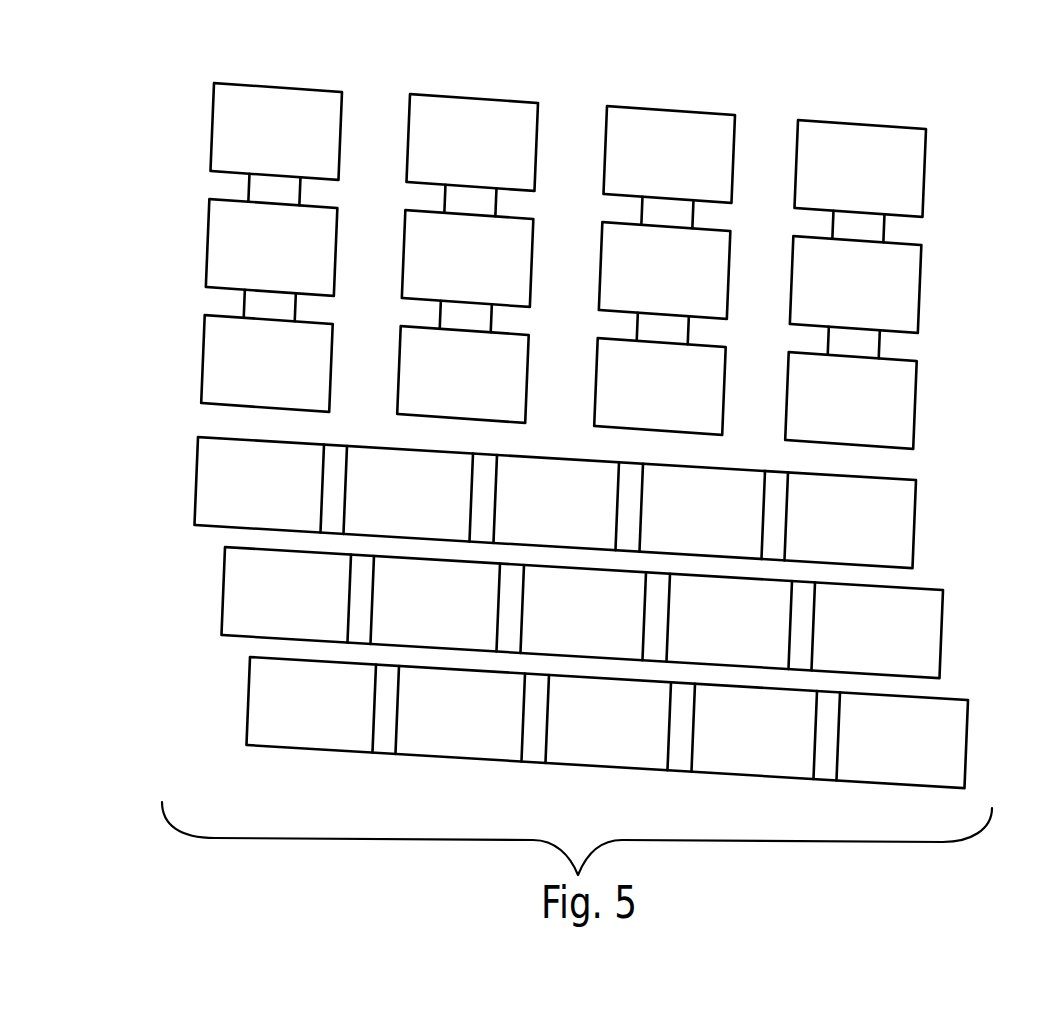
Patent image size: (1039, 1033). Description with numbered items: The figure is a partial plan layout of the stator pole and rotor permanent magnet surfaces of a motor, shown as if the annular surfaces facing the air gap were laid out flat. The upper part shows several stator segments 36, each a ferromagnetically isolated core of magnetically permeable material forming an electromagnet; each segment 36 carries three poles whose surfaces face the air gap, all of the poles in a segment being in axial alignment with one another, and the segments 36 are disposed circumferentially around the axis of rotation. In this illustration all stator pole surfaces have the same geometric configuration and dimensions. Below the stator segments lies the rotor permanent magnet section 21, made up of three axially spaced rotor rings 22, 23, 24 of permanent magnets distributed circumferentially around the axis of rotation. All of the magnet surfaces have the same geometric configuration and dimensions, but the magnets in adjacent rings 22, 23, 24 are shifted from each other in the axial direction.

The stator core segment element 36 is at (583, 230).
The permanent magnet section 21 is at (571, 605).
The rotor magnet ring 22 is at (950, 632).
The rotor magnet ring 23 is at (923, 521).
The rotor magnet ring 24 is at (973, 745).